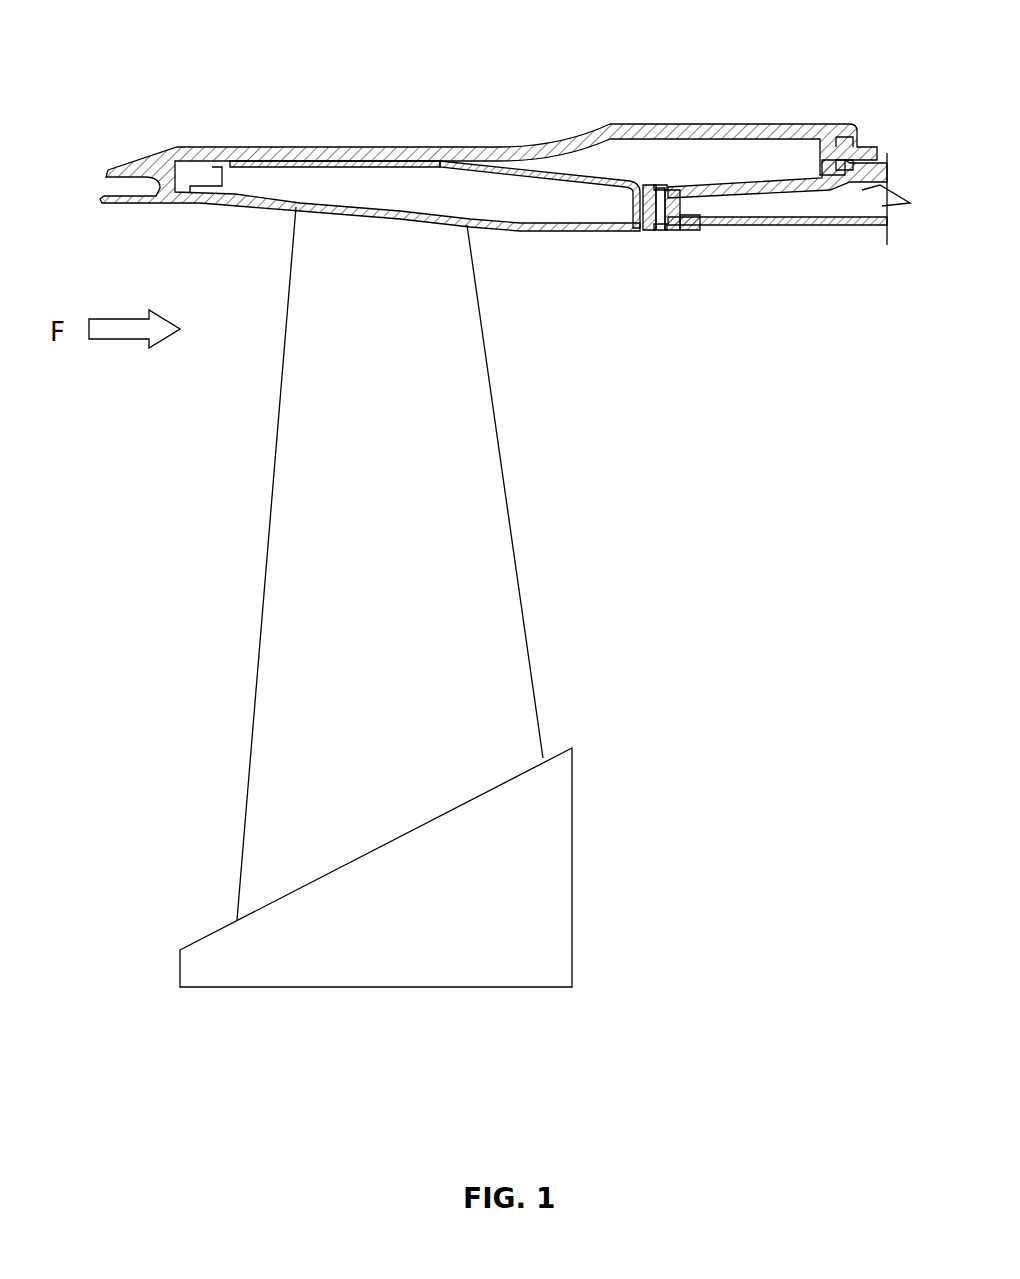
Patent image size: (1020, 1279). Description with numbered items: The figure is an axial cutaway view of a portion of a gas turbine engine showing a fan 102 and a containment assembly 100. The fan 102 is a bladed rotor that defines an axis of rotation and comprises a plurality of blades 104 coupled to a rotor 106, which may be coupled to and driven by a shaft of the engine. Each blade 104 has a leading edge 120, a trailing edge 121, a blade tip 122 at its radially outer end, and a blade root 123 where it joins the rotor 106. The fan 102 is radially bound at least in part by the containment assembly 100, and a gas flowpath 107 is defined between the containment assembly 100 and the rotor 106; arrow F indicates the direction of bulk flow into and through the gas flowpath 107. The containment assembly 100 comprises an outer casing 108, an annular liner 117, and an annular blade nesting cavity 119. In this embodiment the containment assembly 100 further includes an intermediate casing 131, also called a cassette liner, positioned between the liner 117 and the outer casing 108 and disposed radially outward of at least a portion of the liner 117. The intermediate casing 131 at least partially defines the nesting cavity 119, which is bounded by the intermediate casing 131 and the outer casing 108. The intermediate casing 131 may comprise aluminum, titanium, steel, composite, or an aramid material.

The containment assembly 100 is at (137, 51).
The fan 102 is at (141, 636).
The blade 104 is at (414, 563).
The rotor 106 is at (420, 931).
The gas flowpath 107 is at (236, 401).
The outer casing 108 is at (772, 130).
The annular liner 117 is at (253, 178).
The annular blade nesting cavity 119 is at (704, 164).
The leading edge 120 is at (268, 522).
The trailing edge 121 is at (505, 480).
The blade tip 122 is at (442, 227).
The blade root 123 is at (507, 780).
The intermediate casing 131 is at (523, 172).